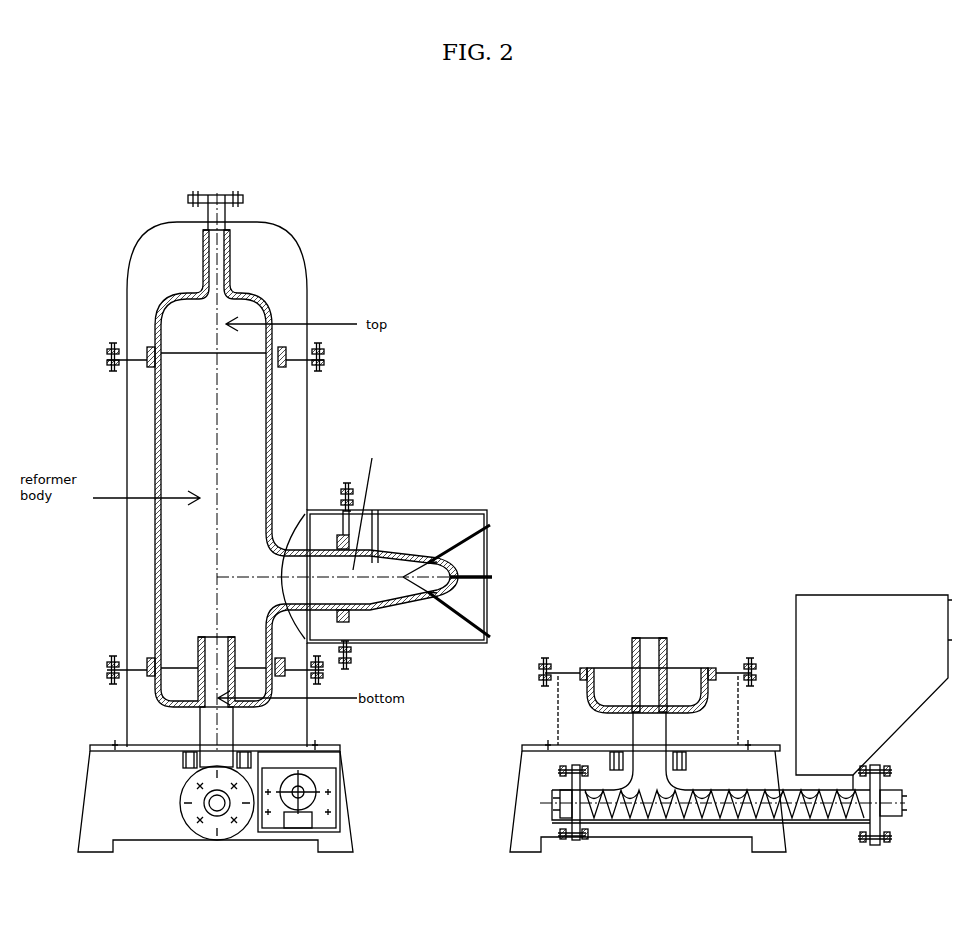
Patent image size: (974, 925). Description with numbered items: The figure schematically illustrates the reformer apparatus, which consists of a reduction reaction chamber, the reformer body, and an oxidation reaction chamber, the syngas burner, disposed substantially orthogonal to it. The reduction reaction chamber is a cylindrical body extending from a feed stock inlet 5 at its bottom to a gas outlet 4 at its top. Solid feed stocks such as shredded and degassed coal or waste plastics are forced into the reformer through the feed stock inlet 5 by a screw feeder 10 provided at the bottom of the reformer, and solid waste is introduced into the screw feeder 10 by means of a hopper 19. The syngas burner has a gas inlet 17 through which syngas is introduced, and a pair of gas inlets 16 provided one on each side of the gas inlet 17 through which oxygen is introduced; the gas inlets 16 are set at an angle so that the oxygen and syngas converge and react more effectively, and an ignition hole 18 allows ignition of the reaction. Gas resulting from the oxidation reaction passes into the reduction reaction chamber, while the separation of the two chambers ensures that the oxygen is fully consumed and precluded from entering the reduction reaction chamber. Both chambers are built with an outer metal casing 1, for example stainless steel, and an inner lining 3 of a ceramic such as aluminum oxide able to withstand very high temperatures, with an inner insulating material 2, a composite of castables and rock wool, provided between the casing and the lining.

The outer metal casing 1 is at (127, 280).
The inner insulating material 2 is at (142, 308).
The inner lining 3 is at (158, 333).
The gas outlet 4 is at (208, 217).
The feed stock inlet 5 is at (200, 730).
The screw feeder 10 is at (585, 805).
The gas inlets 16 is at (441, 668).
The gas inlet 17 is at (465, 575).
The ignition hole 18 is at (355, 568).
The hopper 19 is at (898, 724).